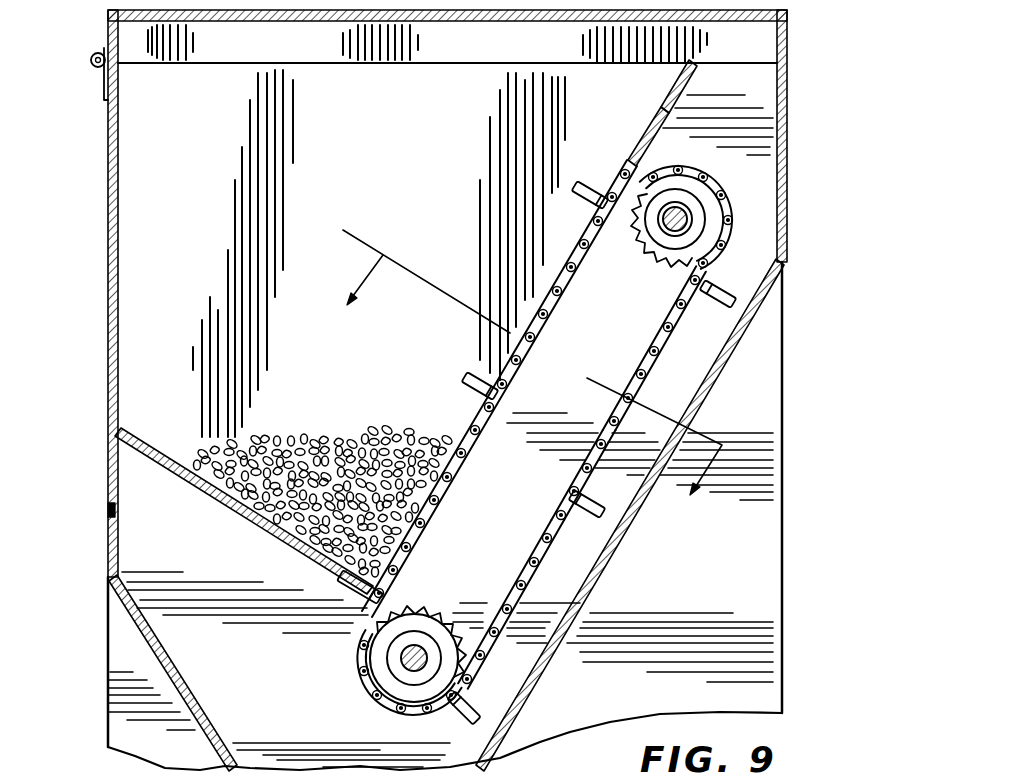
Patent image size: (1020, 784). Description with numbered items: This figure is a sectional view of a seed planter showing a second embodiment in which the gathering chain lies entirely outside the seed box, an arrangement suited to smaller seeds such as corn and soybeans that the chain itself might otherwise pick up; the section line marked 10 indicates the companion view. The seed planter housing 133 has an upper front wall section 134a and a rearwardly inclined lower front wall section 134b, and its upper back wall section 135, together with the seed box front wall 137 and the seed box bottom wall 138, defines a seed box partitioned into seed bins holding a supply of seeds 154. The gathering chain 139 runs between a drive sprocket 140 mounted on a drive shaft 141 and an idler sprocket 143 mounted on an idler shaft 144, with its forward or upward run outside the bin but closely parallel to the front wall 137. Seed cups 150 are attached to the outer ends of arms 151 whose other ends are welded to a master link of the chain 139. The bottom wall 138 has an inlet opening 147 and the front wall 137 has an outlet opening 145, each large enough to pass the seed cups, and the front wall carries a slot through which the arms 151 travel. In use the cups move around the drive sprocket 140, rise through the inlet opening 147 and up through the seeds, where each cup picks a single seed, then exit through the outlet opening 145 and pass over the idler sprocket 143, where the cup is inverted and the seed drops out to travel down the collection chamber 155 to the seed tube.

The section line 10-10 view arrows 10 is at (542, 347).
The seed planter housing 133 is at (798, 160).
The upper front wall section 134a is at (790, 97).
The lower front wall section 134b is at (728, 355).
The upper back wall section 135 is at (108, 243).
The seed box front wall 137 is at (676, 90).
The seed box bottom wall 138 is at (143, 440).
The gathering chain 139 is at (535, 548).
The drive sprocket 140 is at (392, 685).
The drive shaft 141 is at (402, 658).
The idler sprocket 143 is at (700, 205).
The idler shaft 144 is at (683, 222).
The outlet opening 145 is at (655, 127).
The inlet opening 147 is at (348, 577).
The seed cups 150 is at (462, 388).
The arms 151 is at (593, 490).
The seeds 154 is at (357, 447).
The collection chamber 155 is at (663, 395).